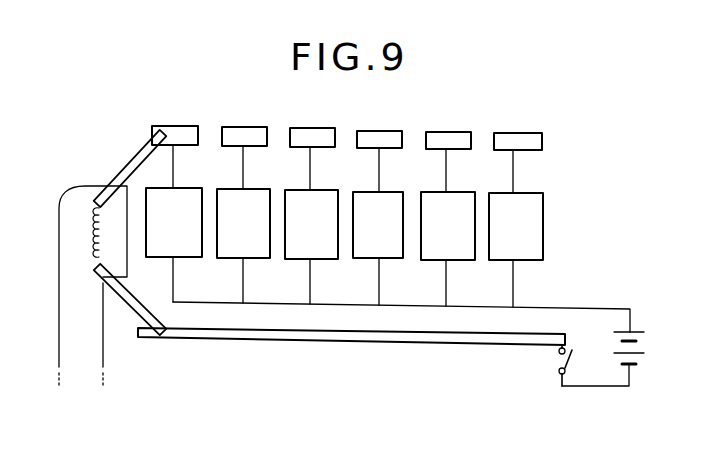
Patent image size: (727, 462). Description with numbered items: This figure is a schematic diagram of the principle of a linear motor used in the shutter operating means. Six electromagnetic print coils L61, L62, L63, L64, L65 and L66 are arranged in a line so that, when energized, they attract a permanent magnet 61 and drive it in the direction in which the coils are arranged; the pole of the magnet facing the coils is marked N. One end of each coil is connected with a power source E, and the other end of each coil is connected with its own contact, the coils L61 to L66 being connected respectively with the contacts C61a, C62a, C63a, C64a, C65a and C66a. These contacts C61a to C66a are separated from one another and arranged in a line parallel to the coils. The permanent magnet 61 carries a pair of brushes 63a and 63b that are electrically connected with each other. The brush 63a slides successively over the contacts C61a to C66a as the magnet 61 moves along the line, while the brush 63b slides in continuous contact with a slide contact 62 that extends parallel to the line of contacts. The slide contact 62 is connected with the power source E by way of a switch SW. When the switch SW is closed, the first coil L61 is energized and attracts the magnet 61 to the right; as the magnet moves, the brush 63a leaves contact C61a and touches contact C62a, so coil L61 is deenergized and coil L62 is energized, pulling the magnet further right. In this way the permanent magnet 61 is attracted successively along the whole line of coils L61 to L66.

The permanent magnet 61 is at (68, 254).
The magnet pole N is at (113, 234).
The brush 63a is at (128, 168).
The brush 63b is at (135, 307).
The slide contact 62 is at (347, 338).
The contact C61a is at (176, 125).
The contact C62a is at (245, 125).
The contact C63a is at (313, 126).
The contact C64a is at (381, 128).
The contact C65a is at (450, 129).
The contact C66a is at (518, 130).
The print coil L61 is at (174, 223).
The print coil L62 is at (243, 224).
The print coil L63 is at (311, 225).
The print coil L64 is at (378, 226).
The print coil L65 is at (448, 227).
The print coil L66 is at (516, 228).
The power source E is at (641, 347).
The switch SW is at (558, 359).